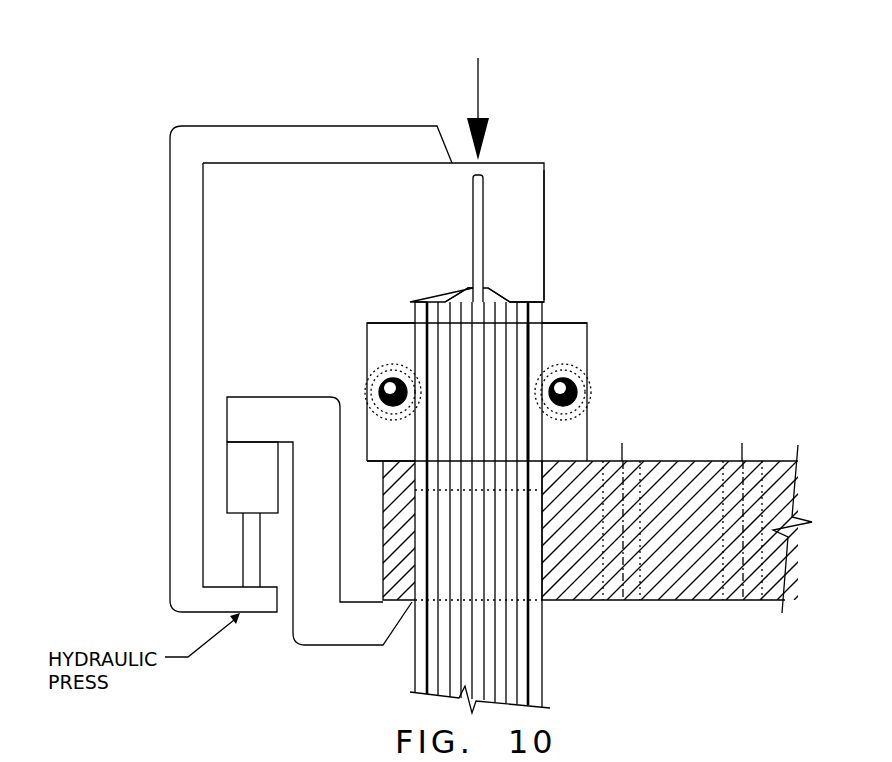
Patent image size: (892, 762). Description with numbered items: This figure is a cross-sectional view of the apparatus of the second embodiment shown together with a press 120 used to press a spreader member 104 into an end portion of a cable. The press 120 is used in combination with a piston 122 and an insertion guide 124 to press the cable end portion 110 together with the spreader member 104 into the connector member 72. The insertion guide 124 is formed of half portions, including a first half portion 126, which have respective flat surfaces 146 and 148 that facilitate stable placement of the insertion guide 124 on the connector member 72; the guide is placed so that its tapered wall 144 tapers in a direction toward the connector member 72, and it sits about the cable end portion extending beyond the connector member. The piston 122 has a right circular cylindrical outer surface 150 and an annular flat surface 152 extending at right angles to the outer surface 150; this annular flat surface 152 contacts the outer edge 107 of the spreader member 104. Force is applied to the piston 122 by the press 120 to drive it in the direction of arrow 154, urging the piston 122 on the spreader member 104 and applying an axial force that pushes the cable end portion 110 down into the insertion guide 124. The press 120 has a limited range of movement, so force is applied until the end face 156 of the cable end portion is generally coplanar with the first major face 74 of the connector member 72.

The press 120 is at (302, 186).
The arrow 154 is at (478, 90).
The piston 122 is at (520, 162).
The outer surface 150 is at (545, 185).
The annular flat surface 152 is at (525, 297).
The end face 156 is at (443, 297).
The spreader member 104 is at (543, 310).
The outer edge 107 is at (418, 312).
The tapered wall 144 is at (533, 340).
The cable end portion 110 is at (367, 348).
The flat surface 146 is at (380, 325).
The insertion guide 124 is at (580, 328).
The flat surface 148 is at (370, 476).
The first half portion 126 is at (585, 460).
The connector member 72 is at (658, 460).
The first major face 74 is at (608, 460).